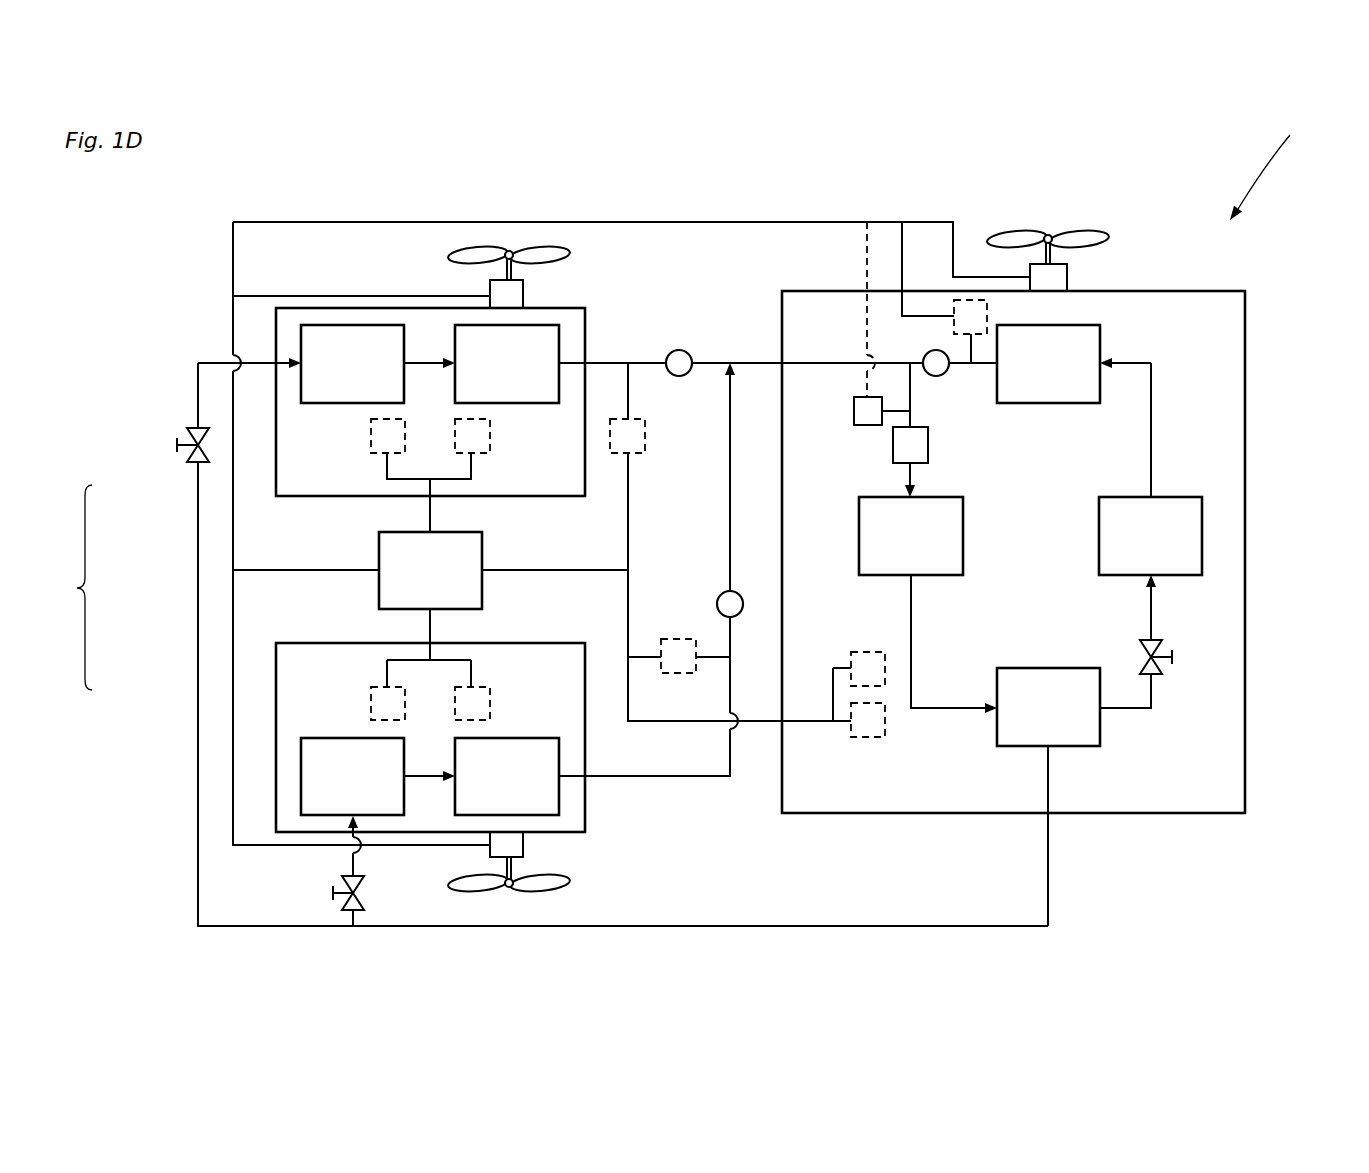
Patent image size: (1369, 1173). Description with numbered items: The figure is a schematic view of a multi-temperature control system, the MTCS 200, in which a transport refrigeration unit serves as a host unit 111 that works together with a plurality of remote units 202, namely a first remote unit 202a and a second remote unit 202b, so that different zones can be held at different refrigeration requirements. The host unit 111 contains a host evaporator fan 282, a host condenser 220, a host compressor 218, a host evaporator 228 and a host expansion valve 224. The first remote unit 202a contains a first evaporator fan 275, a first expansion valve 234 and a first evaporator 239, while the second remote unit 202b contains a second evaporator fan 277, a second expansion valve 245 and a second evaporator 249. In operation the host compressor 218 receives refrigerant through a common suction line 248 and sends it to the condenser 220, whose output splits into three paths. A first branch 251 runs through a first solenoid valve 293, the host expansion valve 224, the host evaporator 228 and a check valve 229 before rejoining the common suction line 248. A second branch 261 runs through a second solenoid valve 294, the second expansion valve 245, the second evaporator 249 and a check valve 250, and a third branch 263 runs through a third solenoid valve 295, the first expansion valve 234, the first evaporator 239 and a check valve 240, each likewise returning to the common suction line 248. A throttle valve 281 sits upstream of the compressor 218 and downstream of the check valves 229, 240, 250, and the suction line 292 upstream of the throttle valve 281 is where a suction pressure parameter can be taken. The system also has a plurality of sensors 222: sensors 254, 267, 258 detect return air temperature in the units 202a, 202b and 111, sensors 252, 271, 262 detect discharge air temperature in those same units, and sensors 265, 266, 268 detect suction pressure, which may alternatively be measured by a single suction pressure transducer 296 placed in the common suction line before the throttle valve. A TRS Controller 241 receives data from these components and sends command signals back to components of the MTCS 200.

The MTCS 200 is at (1295, 172).
The host unit 111 is at (1122, 815).
The remote units 202 is at (332, 568).
The first remote unit 202a is at (275, 477).
The second remote unit 202b is at (275, 682).
The first expansion valve 234 is at (332, 378).
The first evaporator 239 is at (487, 378).
The TRS Controller 241 is at (410, 585).
The second expansion valve 245 is at (332, 791).
The second evaporator 249 is at (487, 791).
The host evaporator 228 is at (1028, 378).
The host compressor 218 is at (891, 550).
The host expansion valve 224 is at (1130, 550).
The host condenser 220 is at (1028, 721).
The first evaporator fan 275 is at (527, 293).
The second evaporator fan 277 is at (525, 847).
The host evaporator fan 282 is at (1085, 232).
The third branch 263 is at (208, 362).
The second branch 261 is at (352, 926).
The third solenoid valve 295 is at (178, 443).
The second solenoid valve 294 is at (332, 898).
The first solenoid valve 293 is at (1147, 663).
The first branch 251 is at (1137, 708).
The common suction line 248 is at (845, 363).
The suction line 292 is at (823, 363).
The check valve 240 is at (668, 352).
The check valve 250 is at (727, 592).
The check valve 229 is at (937, 375).
The throttle valve 281 is at (928, 447).
The suction pressure transducer 296 is at (868, 425).
The sensors 222 is at (678, 546).
The sensor 254 is at (370, 440).
The sensor 252 is at (490, 440).
The sensor 267 is at (370, 700).
The sensor 271 is at (490, 700).
The sensor 265 is at (645, 433).
The sensor 266 is at (688, 639).
The sensor 268 is at (987, 315).
The sensor 258 is at (865, 652).
The sensor 262 is at (858, 737).